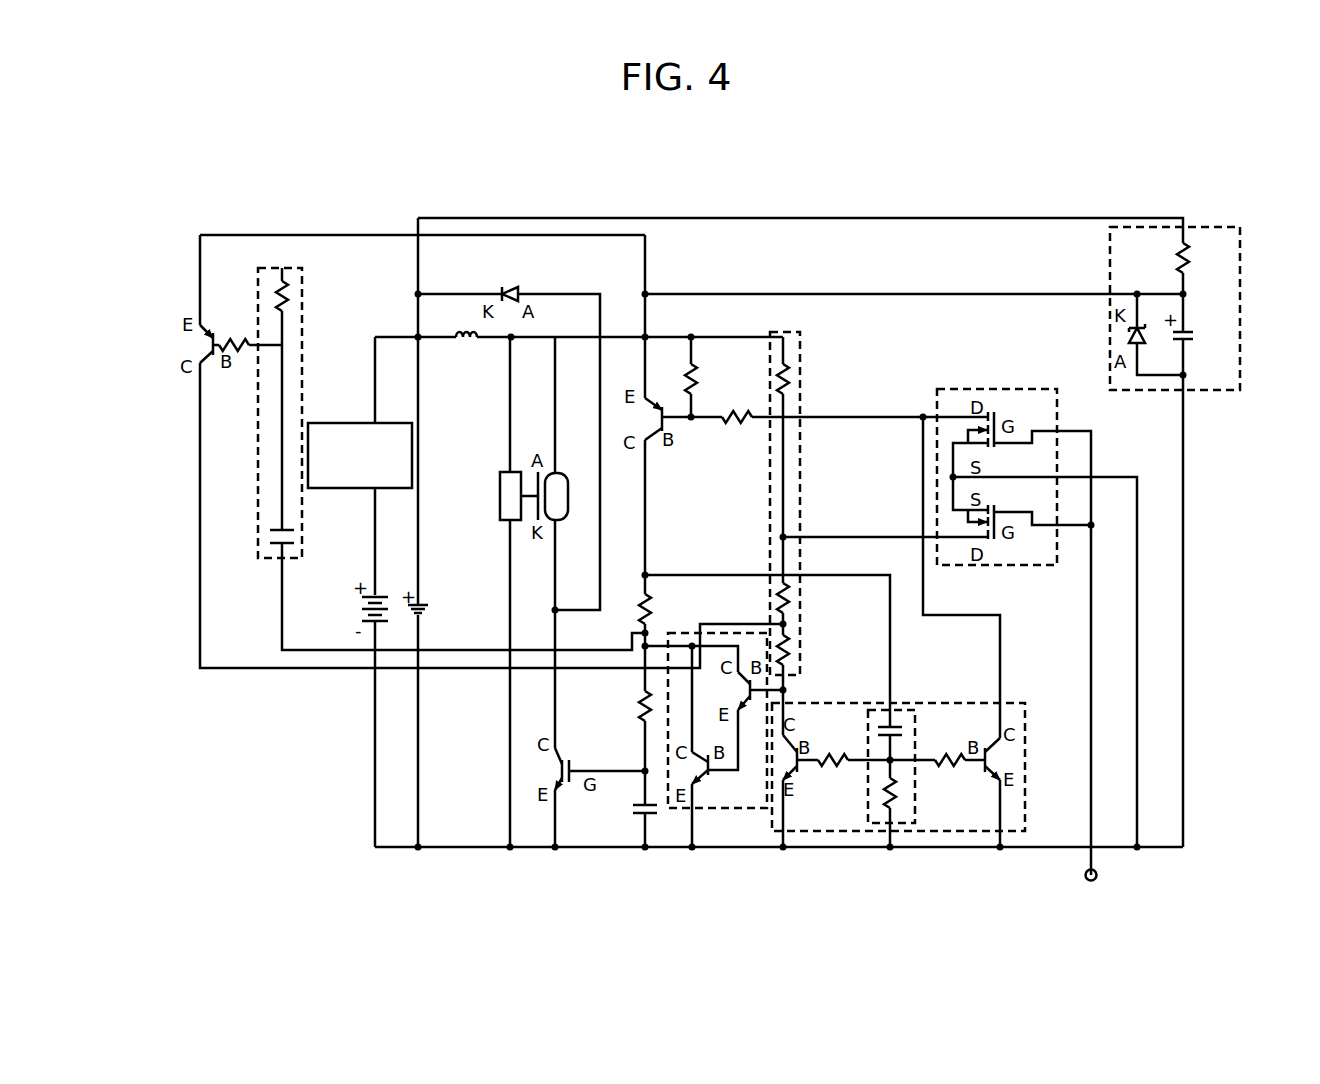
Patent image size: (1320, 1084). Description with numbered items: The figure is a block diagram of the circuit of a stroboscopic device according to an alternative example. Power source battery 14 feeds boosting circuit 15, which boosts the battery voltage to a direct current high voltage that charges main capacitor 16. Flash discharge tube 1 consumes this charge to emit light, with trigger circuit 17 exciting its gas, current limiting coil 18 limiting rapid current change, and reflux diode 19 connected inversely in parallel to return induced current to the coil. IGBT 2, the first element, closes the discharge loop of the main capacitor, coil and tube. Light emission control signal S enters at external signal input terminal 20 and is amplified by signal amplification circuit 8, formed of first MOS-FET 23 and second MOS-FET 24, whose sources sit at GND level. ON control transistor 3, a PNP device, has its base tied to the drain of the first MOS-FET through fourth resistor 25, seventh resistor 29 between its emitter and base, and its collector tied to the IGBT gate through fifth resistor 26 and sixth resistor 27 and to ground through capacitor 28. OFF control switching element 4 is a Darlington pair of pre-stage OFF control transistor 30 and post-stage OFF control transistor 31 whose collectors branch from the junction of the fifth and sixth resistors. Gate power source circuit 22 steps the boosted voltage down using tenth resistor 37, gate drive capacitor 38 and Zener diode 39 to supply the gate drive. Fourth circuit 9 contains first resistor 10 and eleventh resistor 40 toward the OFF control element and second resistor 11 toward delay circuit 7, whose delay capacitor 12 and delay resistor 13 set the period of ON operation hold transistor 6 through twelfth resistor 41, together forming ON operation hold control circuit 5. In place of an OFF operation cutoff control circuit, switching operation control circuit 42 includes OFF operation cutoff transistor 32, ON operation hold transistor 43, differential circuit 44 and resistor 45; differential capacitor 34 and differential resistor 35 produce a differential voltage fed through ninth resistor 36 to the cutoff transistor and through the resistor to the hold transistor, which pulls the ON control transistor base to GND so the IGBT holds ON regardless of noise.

The flash discharge tube 1 is at (570, 495).
The first element (IGBT) 2 is at (566, 760).
The ON control transistor 3 is at (665, 433).
The OFF control switching element 4 is at (720, 630).
The ON operation hold control circuit 5 is at (320, 226).
The ON operation hold transistor 6 is at (205, 343).
The delay circuit 7 is at (277, 265).
The signal amplification circuit 8 is at (1025, 386).
The fourth circuit 9 is at (786, 330).
The first resistor 10 is at (793, 593).
The second resistor 11 is at (790, 363).
The delay capacitor 12 is at (271, 553).
The delay resistor 13 is at (297, 290).
The power source battery 14 is at (365, 608).
The boosting circuit 15 is at (362, 422).
The main capacitor 16 is at (430, 602).
The trigger circuit 17 is at (503, 470).
The current limiting coil 18 is at (463, 343).
The reflux diode 19 is at (507, 287).
The external signal input terminal 20 is at (1092, 890).
The gate power source circuit 22 is at (1212, 226).
The first MOS-FET 23 is at (965, 432).
The second MOS-FET 24 is at (965, 520).
The fourth resistor 25 is at (745, 430).
The fifth resistor 26 is at (636, 616).
The sixth resistor 27 is at (636, 703).
The capacitor (third storage element) 28 is at (632, 812).
The seventh resistor 29 is at (700, 375).
The pre-stage OFF control transistor 30 is at (747, 668).
The post-stage OFF control transistor 31 is at (712, 780).
The OFF operation cutoff transistor 32 is at (795, 738).
The differential capacitor 34 is at (893, 723).
The differential resistor 35 is at (905, 787).
The ninth resistor 36 is at (832, 772).
The tenth resistor 37 is at (1192, 260).
The gate drive capacitor 38 is at (1192, 334).
The Zener diode 39 is at (1125, 335).
The eleventh resistor 40 is at (795, 648).
The twelfth resistor 41 is at (245, 340).
The switching operation control circuit 42 is at (830, 835).
The ON operation hold transistor 43 is at (1010, 760).
The differential circuit 44 is at (900, 830).
The resistor 45 is at (948, 752).